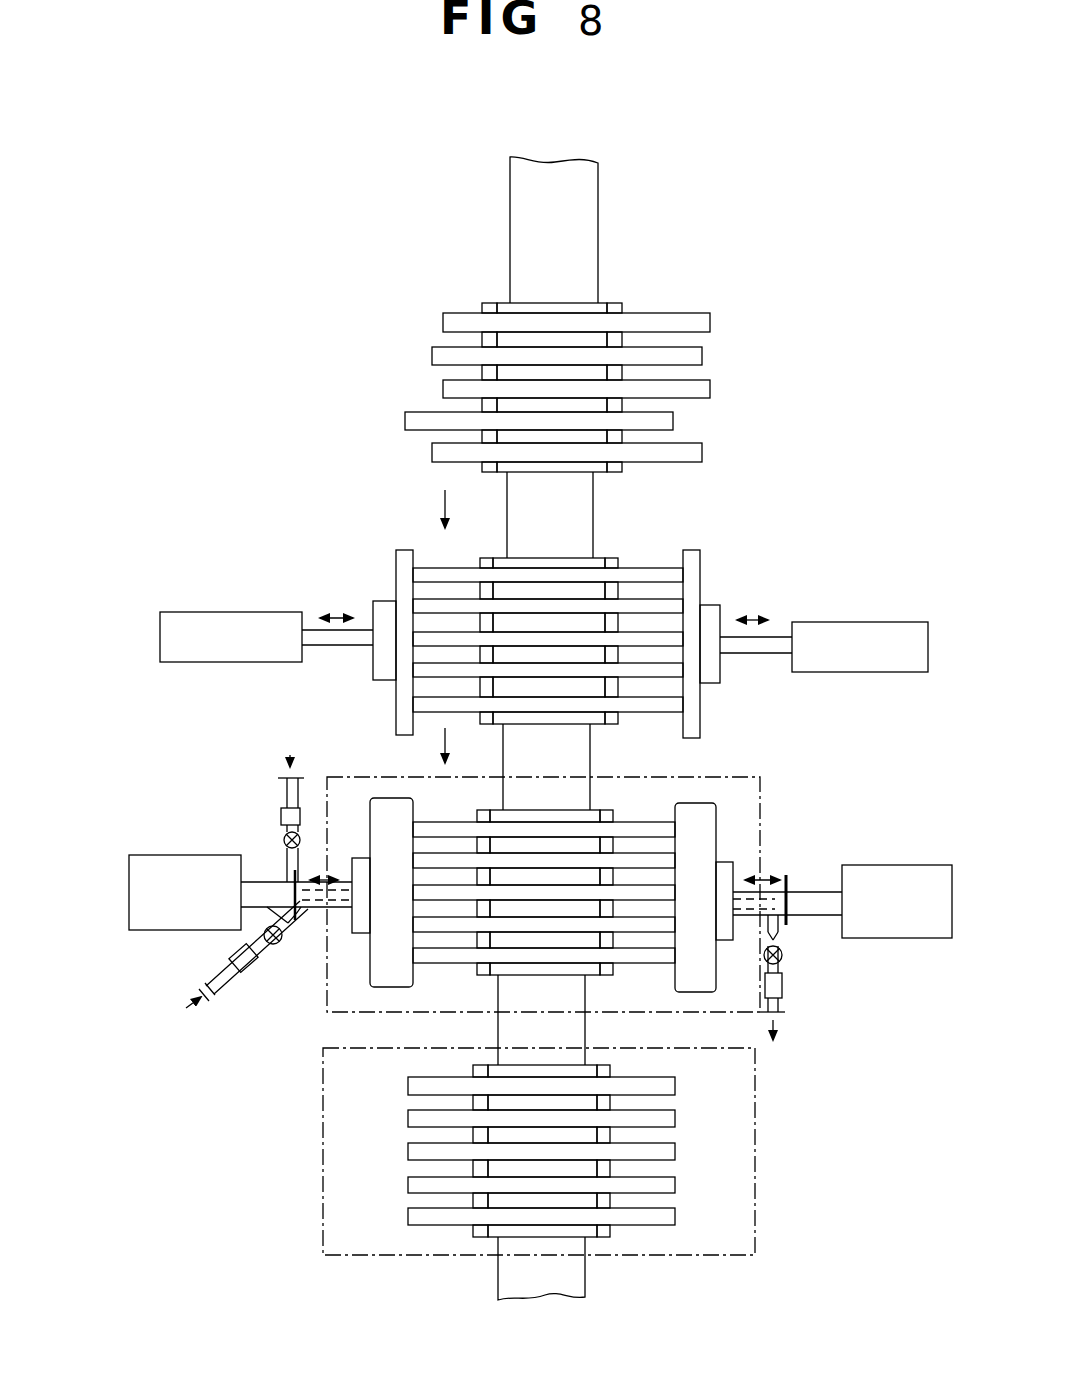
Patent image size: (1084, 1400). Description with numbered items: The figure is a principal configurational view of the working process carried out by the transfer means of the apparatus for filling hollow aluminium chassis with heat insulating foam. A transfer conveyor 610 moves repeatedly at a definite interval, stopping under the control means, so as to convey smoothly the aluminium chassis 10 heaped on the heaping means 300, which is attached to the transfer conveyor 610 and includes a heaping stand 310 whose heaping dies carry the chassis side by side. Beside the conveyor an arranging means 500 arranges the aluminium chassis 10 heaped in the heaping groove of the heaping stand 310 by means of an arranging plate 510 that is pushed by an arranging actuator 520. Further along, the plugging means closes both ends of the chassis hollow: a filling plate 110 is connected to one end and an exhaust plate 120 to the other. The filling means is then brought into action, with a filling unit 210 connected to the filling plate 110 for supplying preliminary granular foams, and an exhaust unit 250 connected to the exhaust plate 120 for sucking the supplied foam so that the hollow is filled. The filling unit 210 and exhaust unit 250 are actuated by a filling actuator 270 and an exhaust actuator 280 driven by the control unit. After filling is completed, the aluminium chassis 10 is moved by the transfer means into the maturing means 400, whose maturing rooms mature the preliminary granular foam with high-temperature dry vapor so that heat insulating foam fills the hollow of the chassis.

The aluminium chassis 10 is at (710, 325).
The filling plate 110 is at (389, 794).
The exhaust plate 120 is at (706, 792).
The filling unit 210 is at (263, 844).
The exhaust unit 250 is at (802, 863).
The filling actuator 270 is at (155, 931).
The exhaust actuator 280 is at (910, 938).
The heaping means 300 is at (784, 619).
The heaping stand 310 is at (616, 303).
The maturing means 400 is at (768, 1130).
The arranging means 500 is at (252, 681).
The arranging plate 510 is at (405, 553).
The arranging actuator 520 is at (228, 620).
The transfer conveyor 610 is at (575, 232).